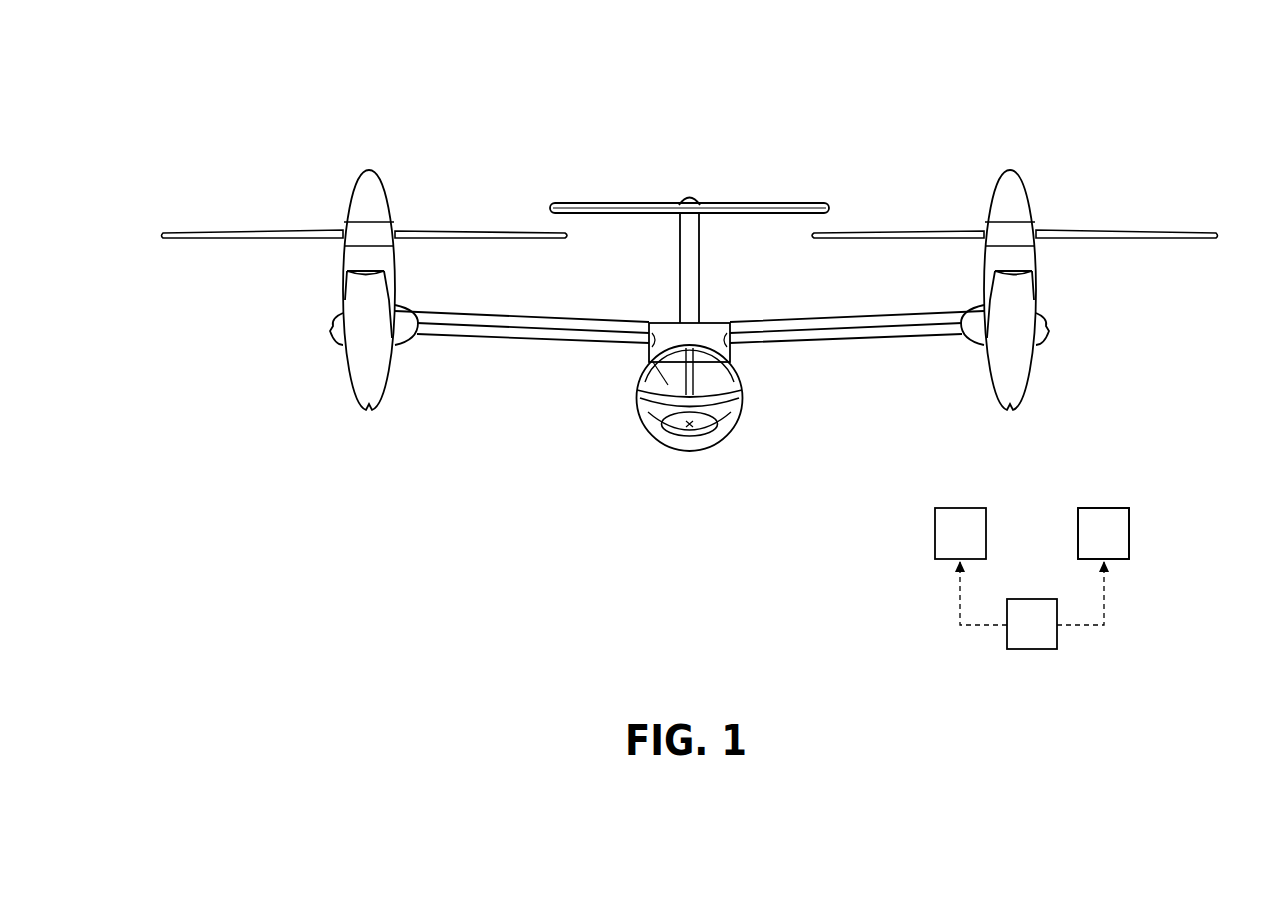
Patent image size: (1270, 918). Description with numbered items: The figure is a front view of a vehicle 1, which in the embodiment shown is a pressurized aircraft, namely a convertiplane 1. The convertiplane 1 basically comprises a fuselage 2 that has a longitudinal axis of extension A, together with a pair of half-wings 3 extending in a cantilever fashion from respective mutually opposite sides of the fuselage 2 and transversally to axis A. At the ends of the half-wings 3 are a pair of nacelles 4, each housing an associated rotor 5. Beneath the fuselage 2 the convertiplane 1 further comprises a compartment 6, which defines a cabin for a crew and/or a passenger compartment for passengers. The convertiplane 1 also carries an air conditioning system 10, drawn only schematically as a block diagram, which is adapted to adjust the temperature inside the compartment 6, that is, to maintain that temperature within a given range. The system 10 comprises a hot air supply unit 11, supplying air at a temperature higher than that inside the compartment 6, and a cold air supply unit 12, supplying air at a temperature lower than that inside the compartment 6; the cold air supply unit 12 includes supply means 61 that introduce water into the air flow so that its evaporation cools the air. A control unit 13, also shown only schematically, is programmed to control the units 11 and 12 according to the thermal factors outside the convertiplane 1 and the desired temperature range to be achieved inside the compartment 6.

The vehicle 1 is at (768, 157).
The fuselage 2 is at (762, 402).
The half-wings 3 is at (486, 345).
The nacelles 4 is at (396, 179).
The rotors 5 is at (254, 204).
The compartment 6 is at (668, 404).
The longitudinal axis of extension A is at (688, 427).
The air conditioning system 10 is at (1056, 559).
The hot air supply unit 11 is at (945, 537).
The cold air supply unit 12 is at (1125, 535).
The supply means 61 is at (1103, 533).
The control unit 13 is at (1042, 642).